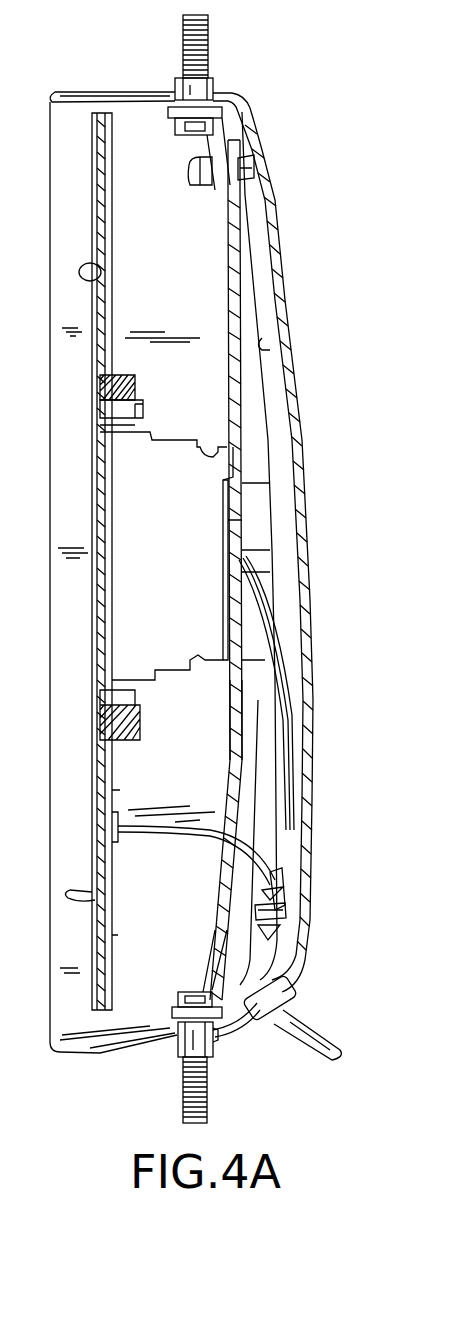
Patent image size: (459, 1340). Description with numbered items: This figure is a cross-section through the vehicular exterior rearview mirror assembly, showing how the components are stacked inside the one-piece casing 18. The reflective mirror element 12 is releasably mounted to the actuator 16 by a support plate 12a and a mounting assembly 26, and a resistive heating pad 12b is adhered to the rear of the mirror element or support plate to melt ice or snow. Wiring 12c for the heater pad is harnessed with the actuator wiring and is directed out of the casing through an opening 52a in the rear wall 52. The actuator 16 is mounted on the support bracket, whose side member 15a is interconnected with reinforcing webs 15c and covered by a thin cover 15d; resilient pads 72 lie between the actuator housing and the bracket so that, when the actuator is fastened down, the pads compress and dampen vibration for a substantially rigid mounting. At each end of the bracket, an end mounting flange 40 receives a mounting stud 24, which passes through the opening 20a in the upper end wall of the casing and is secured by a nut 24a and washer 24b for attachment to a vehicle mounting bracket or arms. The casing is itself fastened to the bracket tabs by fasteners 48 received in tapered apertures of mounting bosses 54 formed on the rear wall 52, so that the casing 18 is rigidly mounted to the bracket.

The reflective mirror element 12 is at (90, 893).
The support plate 12a is at (96, 265).
The resistive heating element or pad 12b is at (112, 792).
The wiring for heater pad 12c is at (220, 818).
The side member 15a is at (250, 410).
The reinforcing web 15c is at (262, 338).
The thin cover 15d is at (228, 705).
The actuator 16 is at (182, 425).
The casing or shell 18 is at (285, 190).
The opening in upper end wall 20a is at (178, 92).
The mounting stud 24 is at (210, 40).
The nut 24a is at (205, 90).
The washer 24b is at (218, 1035).
The mounting assembly 26 is at (218, 312).
The end mounting flange 40 is at (170, 117).
The fastener 48 is at (195, 178).
The rear wall 52 is at (312, 838).
The opening in rear wall 52a is at (300, 984).
The mounting boss 54 is at (246, 165).
The resilient pad 72 is at (229, 527).